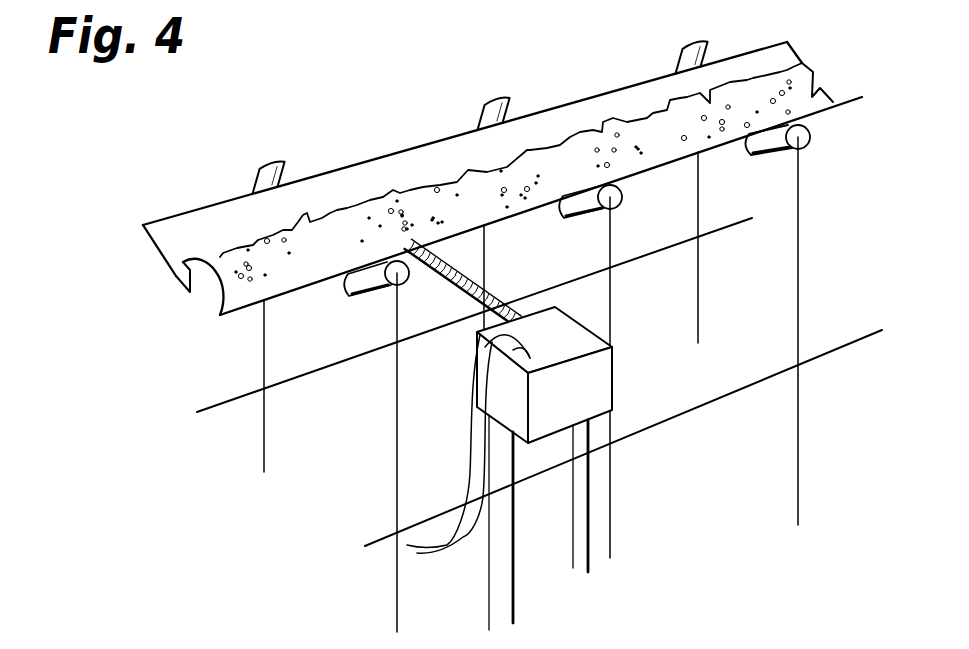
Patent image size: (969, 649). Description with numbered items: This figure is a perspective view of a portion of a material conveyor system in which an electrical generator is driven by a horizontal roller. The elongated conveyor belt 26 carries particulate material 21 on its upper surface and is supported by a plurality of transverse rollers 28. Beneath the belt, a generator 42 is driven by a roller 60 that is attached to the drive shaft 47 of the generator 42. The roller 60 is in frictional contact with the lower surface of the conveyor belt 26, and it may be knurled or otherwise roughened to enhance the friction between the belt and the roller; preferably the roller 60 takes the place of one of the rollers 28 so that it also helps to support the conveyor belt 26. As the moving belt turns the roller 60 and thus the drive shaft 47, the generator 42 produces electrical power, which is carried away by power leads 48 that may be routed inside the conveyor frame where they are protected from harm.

The particulate material 21 is at (787, 83).
The conveyor belt 26 is at (777, 53).
The rollers 28 is at (270, 172).
The generator 42 is at (598, 365).
The drive shaft 47 is at (508, 302).
The power leads 48 is at (442, 558).
The roller 60 is at (438, 273).